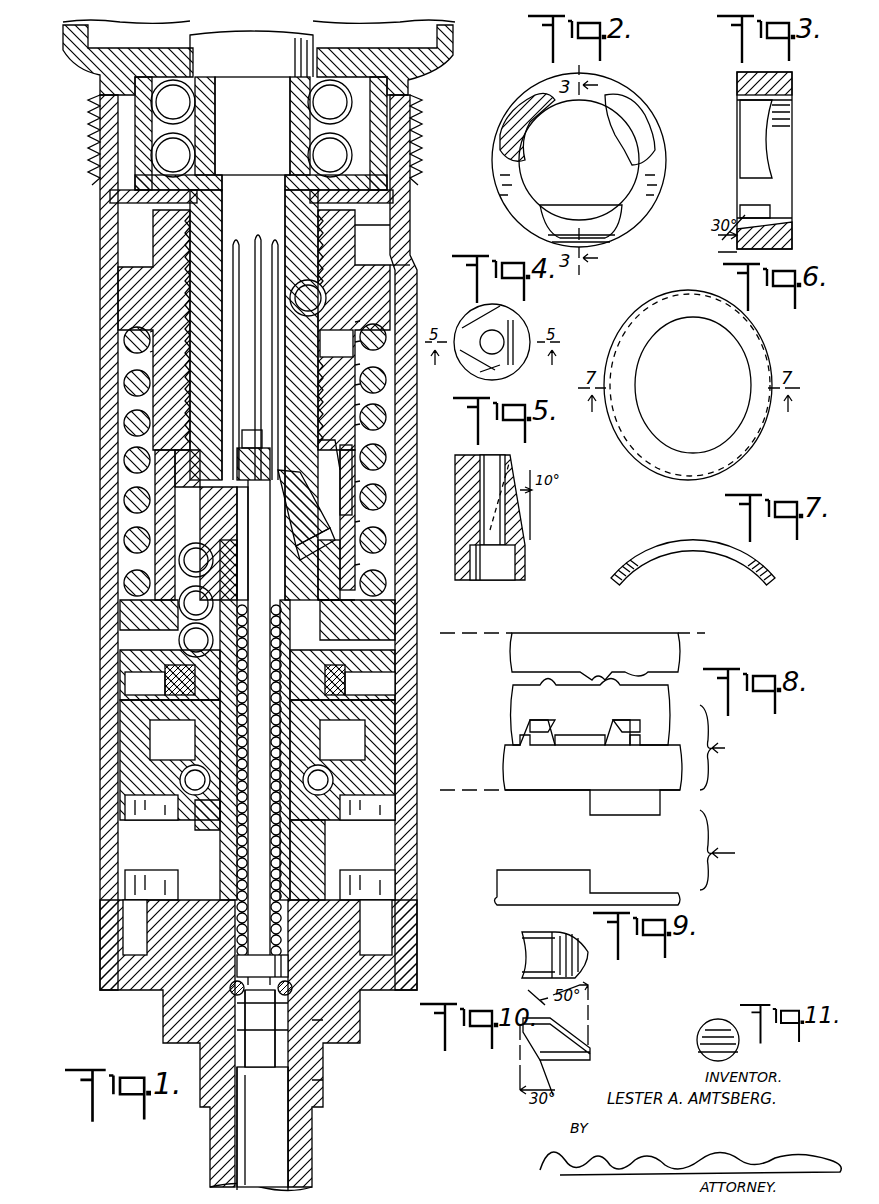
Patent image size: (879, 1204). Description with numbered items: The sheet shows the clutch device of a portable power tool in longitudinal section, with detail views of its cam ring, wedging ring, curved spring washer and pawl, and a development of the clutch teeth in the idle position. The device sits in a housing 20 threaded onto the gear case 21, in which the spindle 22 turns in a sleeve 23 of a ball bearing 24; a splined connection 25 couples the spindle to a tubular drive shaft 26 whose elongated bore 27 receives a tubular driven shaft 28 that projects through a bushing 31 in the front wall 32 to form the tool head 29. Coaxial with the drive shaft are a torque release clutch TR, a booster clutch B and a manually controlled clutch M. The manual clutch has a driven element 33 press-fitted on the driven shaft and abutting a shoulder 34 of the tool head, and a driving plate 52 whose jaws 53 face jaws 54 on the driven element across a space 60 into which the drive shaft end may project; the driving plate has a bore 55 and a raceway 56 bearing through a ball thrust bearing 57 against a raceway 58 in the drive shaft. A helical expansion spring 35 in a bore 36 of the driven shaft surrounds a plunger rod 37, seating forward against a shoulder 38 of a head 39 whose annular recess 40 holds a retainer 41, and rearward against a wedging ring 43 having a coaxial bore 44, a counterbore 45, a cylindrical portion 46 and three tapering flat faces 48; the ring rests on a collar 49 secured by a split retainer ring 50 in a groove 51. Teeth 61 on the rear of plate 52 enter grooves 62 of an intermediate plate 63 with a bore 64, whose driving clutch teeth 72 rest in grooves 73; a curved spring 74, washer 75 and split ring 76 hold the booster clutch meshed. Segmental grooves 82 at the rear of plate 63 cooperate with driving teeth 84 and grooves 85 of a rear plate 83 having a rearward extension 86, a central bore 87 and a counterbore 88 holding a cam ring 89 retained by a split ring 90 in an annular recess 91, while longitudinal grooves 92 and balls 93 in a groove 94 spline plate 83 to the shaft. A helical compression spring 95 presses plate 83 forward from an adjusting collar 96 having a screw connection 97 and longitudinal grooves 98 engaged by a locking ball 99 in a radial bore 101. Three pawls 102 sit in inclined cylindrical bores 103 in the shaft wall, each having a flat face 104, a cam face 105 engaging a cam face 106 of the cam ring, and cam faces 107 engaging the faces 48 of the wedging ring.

In FIG. 1, the housing 20 is at (100, 345).
In FIG. 1, the gear case 21 is at (75, 50).
In FIG. 1, the spindle 22 is at (253, 136).
In FIG. 1, the sleeve 23 is at (200, 97).
In FIG. 1, the ball bearing 24 is at (330, 95).
In FIG. 1, the splined connection 25 is at (265, 225).
In FIG. 1, the tubular drive shaft 26 is at (205, 365).
In FIG. 1, the elongated bore 27 is at (212, 385).
In FIG. 1, the tubular driven shaft 28 is at (300, 840).
In FIG. 1, the tool head 29 is at (312, 1100).
In FIG. 1, the bushing 31 is at (320, 1060).
In FIG. 1, the front wall 32 is at (145, 950).
In FIG. 1, the driven element 33 is at (380, 925).
In FIG. 8, the driven element 33 is at (566, 902).
In FIG. 1, the shoulder 34 is at (340, 945).
In FIG. 1, the helical expansion spring 35 is at (320, 665).
In FIG. 1, the bore 36 is at (290, 855).
In FIG. 1, the plunger rod 37 is at (255, 407).
In FIG. 1, the shoulder 38 is at (245, 967).
In FIG. 1, the head 39 is at (232, 990).
In FIG. 1, the annular recess 40 is at (262, 995).
In FIG. 1, the retainer 41 is at (238, 995).
In FIG. 1, the wedging ring 43 is at (200, 500).
In FIG. 5, the wedging ring 43 is at (520, 580).
In FIG. 1, the coaxial bore 44 is at (248, 520).
In FIG. 4, the coaxial bore 44 is at (500, 338).
In FIG. 5, the coaxial bore 44 is at (497, 467).
In FIG. 5, the counterbore 45 is at (505, 552).
In FIG. 1, the cylindrical portion 46 is at (355, 552).
In FIG. 4, the cylindrical portion 46 is at (500, 380).
In FIG. 1, the flat faces 48 is at (300, 560).
In FIG. 4, the flat faces 48 is at (475, 318).
In FIG. 5, the flat faces 48 is at (522, 520).
In FIG. 1, the collar 49 is at (240, 450).
In FIG. 1, the split retainer ring 50 is at (262, 440).
In FIG. 1, the groove 51 is at (253, 464).
In FIG. 1, the driving plate 52 is at (385, 760).
In FIG. 8, the driving plate 52 is at (505, 750).
In FIG. 1, the jaws 53 is at (135, 806).
In FIG. 8, the jaws 53 is at (590, 800).
In FIG. 1, the jaws 54 is at (135, 883).
In FIG. 8, the jaws 54 is at (510, 878).
In FIG. 1, the bore 55 is at (342, 740).
In FIG. 1, the raceway 56 is at (172, 740).
In FIG. 1, the ball thrust bearing 57 is at (185, 782).
In FIG. 1, the raceway 58 is at (205, 830).
In FIG. 1, the space 60 is at (326, 890).
In FIG. 8, the teeth 61 is at (555, 728).
In FIG. 8, the grooves 62 is at (530, 750).
In FIG. 1, the intermediate plate 63 is at (385, 692).
In FIG. 8, the intermediate plate 63 is at (513, 705).
In FIG. 1, the bore 64 is at (304, 697).
In FIG. 8, the driving clutch teeth 72 is at (600, 720).
In FIG. 8, the grooves 73 is at (650, 755).
In FIG. 1, the spring 74 is at (337, 687).
In FIG. 6, the spring 74 is at (672, 300).
In FIG. 7, the spring 74 is at (680, 533).
In FIG. 1, the washer 75 is at (380, 655).
In FIG. 1, the split ring 76 is at (300, 680).
In FIG. 8, the segmental grooves 82 is at (612, 688).
In FIG. 1, the rear plate 83 is at (130, 684).
In FIG. 8, the rear plate 83 is at (512, 650).
In FIG. 8, the driving teeth 84 is at (592, 676).
In FIG. 8, the grooves 85 is at (608, 673).
In FIG. 1, the rearward extension 86 is at (390, 583).
In FIG. 1, the central bore 87 is at (322, 590).
In FIG. 1, the counterbore 88 is at (330, 505).
In FIG. 1, the cam ring 89 is at (355, 520).
In FIG. 2, the cam ring 89 is at (640, 205).
In FIG. 3, the cam ring 89 is at (785, 240).
In FIG. 1, the split ring 90 is at (360, 445).
In FIG. 1, the annular recess 91 is at (352, 470).
In FIG. 1, the longitudinal grooves 92 is at (180, 585).
In FIG. 1, the balls 93 is at (180, 610).
In FIG. 1, the groove 94 is at (260, 545).
In FIG. 1, the helical compression spring 95 is at (385, 415).
In FIG. 1, the adjusting collar 96 is at (395, 275).
In FIG. 1, the screw connection 97 is at (355, 230).
In FIG. 1, the longitudinal grooves 98 is at (320, 295).
In FIG. 1, the locking ball 99 is at (336, 343).
In FIG. 1, the radial bore 101 is at (322, 250).
In FIG. 1, the pawls 102 is at (304, 508).
In FIG. 9, the pawls 102 is at (535, 955).
In FIG. 10, the pawls 102 is at (560, 1062).
In FIG. 11, the pawls 102 is at (700, 1028).
In FIG. 1, the cylindrical bore 103 is at (334, 444).
In FIG. 10, the flat face 104 is at (575, 1055).
In FIG. 11, the flat face 104 is at (712, 1058).
In FIG. 9, the cam face 105 is at (585, 958).
In FIG. 10, the cam face 105 is at (570, 1035).
In FIG. 11, the cam face 105 is at (720, 1032).
In FIG. 1, the cam face 106 is at (330, 545).
In FIG. 2, the cam face 106 is at (530, 130).
In FIG. 3, the cam face 106 is at (745, 118).
In FIG. 10, the cam faces 107 is at (530, 1040).
In FIG. 1, the torque release clutch TR is at (90, 665).
In FIG. 8, the torque release clutch TR is at (690, 667).
In FIG. 1, the booster clutch B is at (90, 728).
In FIG. 8, the booster clutch B is at (733, 747).
In FIG. 1, the manually controlled clutch M is at (100, 850).
In FIG. 8, the manually controlled clutch M is at (732, 850).